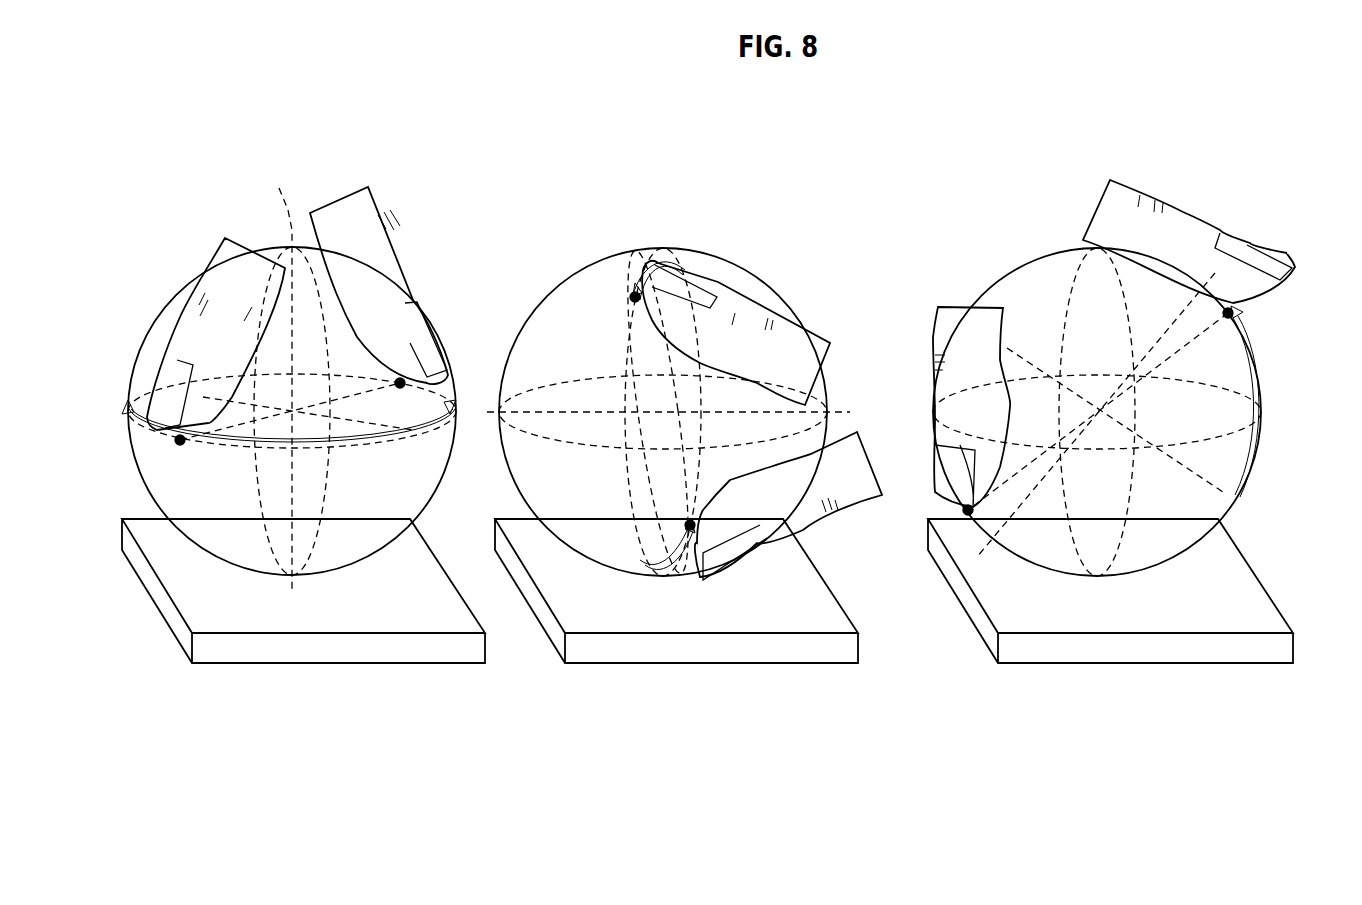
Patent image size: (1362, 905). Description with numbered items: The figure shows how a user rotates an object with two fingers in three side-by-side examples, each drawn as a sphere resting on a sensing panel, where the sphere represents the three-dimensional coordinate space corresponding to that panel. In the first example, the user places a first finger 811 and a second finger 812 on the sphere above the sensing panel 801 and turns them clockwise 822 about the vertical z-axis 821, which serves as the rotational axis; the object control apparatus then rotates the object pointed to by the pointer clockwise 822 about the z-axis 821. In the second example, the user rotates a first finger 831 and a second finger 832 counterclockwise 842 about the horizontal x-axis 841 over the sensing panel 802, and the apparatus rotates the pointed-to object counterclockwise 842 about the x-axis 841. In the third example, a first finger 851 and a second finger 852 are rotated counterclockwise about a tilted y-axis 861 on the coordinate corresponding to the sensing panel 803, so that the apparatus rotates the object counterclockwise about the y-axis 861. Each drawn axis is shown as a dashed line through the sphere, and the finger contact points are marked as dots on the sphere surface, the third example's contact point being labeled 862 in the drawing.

The sensing panel 801 is at (340, 652).
The sensing panel 802 is at (710, 652).
The sensing panel 803 is at (1145, 650).
The first finger 811 is at (220, 258).
The second finger 812 is at (377, 218).
The z-axis 821 is at (279, 188).
The clockwise rotation 822 is at (132, 432).
The first finger 831 is at (743, 302).
The second finger 832 is at (853, 500).
The x-axis 841 is at (840, 412).
The counterclockwise rotation 842 is at (667, 228).
The first finger 851 is at (1138, 198).
The second finger 852 is at (957, 323).
The y-axis 861 is at (982, 548).
The touch point 862 is at (1257, 335).